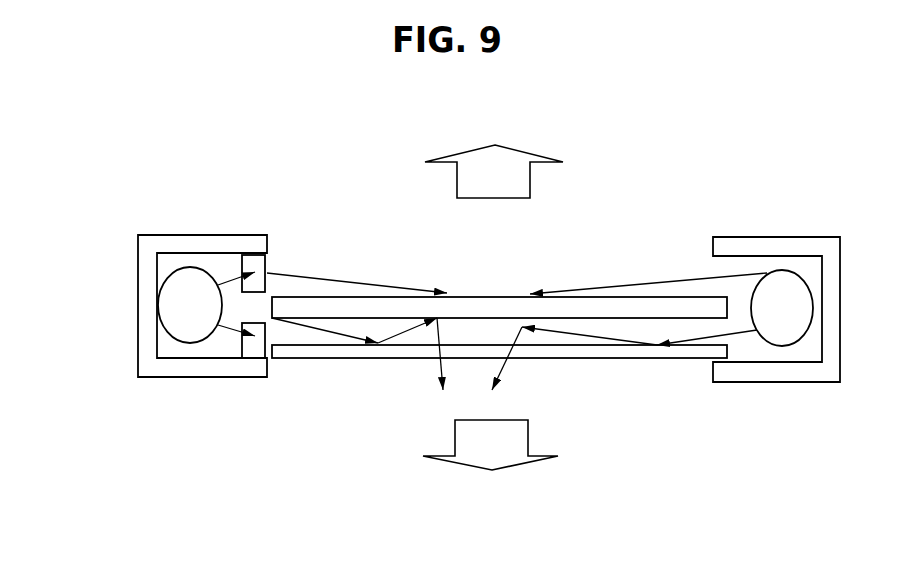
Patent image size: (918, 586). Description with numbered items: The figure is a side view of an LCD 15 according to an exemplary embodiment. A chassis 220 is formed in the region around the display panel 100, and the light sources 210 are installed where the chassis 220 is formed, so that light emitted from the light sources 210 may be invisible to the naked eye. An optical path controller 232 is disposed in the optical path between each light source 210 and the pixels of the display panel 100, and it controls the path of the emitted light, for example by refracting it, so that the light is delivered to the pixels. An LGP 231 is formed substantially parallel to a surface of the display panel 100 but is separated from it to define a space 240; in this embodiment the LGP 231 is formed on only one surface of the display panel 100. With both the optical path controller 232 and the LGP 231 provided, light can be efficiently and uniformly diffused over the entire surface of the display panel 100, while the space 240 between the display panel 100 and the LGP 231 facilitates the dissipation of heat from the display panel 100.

The LCD 15 is at (763, 162).
The chassis 220 is at (150, 287).
The light source 210 is at (177, 318).
The optical path controller 232 is at (257, 325).
The display panel 100 is at (510, 305).
The LGP 231 is at (608, 350).
The space 240 is at (489, 329).